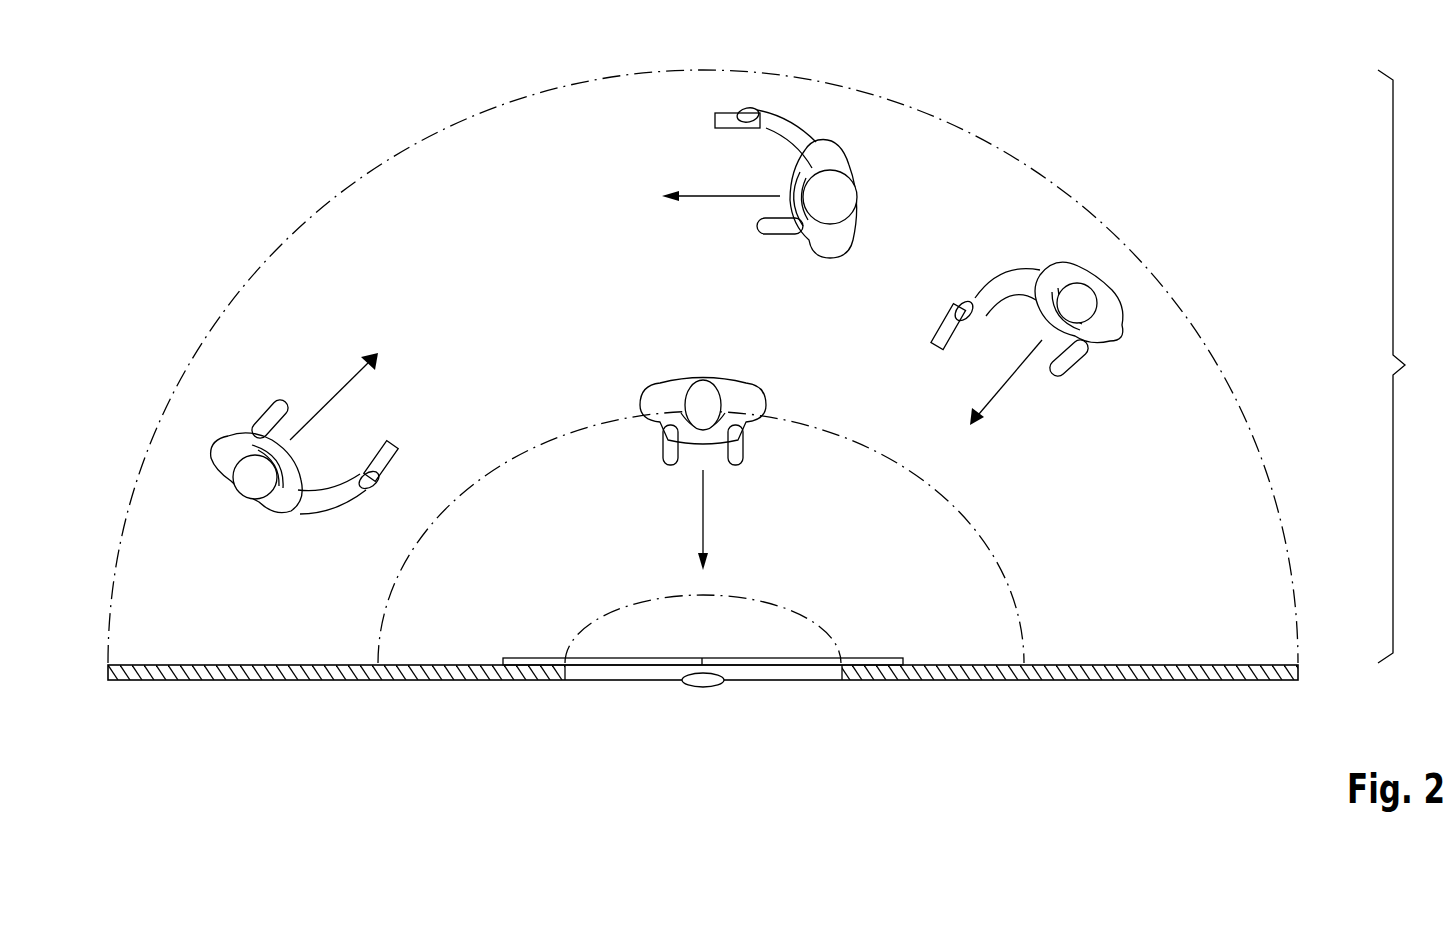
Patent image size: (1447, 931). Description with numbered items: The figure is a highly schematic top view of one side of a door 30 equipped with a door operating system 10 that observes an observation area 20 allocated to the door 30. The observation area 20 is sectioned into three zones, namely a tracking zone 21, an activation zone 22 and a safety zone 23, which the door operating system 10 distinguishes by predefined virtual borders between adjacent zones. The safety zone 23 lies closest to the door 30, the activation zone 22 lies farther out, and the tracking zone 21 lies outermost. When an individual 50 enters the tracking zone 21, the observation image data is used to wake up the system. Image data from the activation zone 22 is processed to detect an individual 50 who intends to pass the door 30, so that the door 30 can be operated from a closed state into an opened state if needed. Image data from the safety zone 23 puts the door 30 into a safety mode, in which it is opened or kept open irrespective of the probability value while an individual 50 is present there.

The door operating system 10 is at (703, 686).
The observation area 20 is at (1408, 366).
The tracking zone 21 is at (1295, 570).
The activation zone 22 is at (1018, 600).
The safety zone 23 is at (814, 616).
The door 30 is at (803, 729).
The individual 50 is at (813, 134).